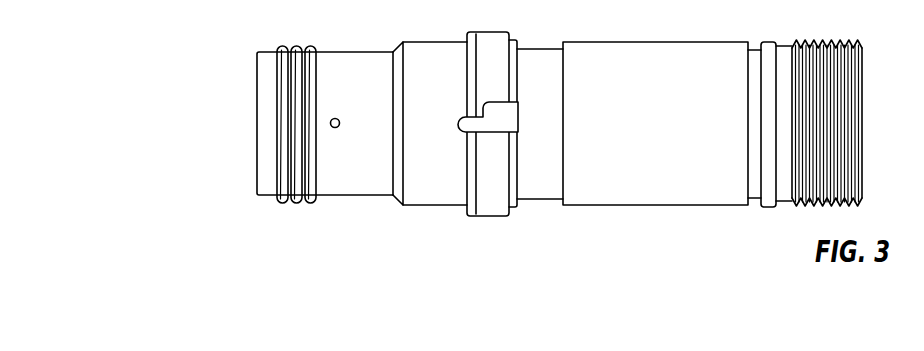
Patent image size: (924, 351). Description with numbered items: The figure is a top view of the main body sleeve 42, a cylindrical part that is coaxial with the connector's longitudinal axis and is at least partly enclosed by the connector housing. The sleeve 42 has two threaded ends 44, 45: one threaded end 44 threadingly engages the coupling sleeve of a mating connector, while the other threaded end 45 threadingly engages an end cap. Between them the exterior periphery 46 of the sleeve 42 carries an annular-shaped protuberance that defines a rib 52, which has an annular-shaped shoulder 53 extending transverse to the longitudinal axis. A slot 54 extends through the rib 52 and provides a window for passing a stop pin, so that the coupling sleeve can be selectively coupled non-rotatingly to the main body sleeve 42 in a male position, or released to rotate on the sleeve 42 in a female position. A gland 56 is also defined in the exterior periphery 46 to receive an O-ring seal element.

The sleeve 42 is at (220, 76).
The threaded end 44 is at (316, 198).
The threaded end 45 is at (856, 166).
The exterior periphery 46 is at (587, 32).
The rib 52 is at (492, 38).
The annular-shaped shoulder 53 is at (512, 212).
The slot 54 is at (500, 104).
The gland 56 is at (756, 48).